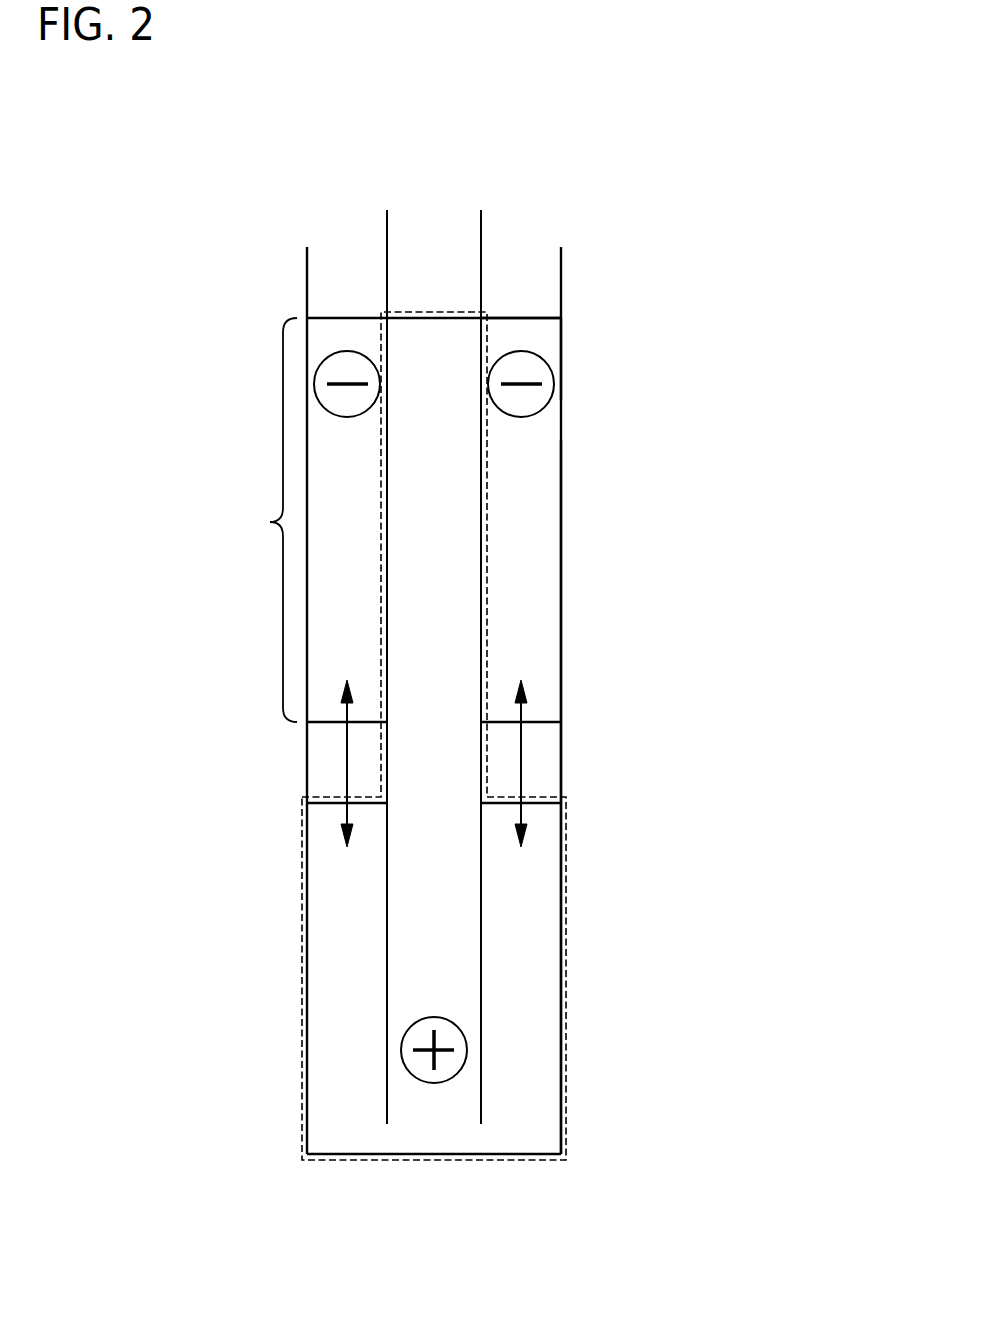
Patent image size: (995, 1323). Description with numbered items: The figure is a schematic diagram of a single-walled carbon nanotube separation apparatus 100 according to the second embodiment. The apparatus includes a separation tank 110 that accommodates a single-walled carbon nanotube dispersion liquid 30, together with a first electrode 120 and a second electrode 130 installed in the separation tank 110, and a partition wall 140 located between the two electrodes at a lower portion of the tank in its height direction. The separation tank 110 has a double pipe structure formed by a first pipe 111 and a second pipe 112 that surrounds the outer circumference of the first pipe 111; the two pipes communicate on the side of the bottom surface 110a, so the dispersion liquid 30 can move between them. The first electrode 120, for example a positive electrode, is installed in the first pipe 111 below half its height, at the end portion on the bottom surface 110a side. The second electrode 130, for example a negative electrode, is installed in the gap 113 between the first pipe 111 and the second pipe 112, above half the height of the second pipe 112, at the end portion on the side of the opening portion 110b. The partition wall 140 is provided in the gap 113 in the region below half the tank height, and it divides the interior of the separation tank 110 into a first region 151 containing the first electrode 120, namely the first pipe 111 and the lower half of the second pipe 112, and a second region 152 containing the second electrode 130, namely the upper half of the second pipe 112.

The single-walled carbon nanotube separation apparatus 100 is at (697, 178).
The separation tank 110 is at (561, 287).
The bottom surface 110a is at (498, 1155).
The opening portion 110b is at (561, 262).
The first pipe 111 is at (481, 456).
The second pipe 112 is at (561, 418).
The gap 113 is at (527, 510).
The single-walled carbon nanotube dispersion liquid 30 is at (535, 580).
The first electrode 120 is at (448, 1018).
The second electrode 130 is at (533, 353).
The partition wall 140 is at (540, 722).
The first region 151 is at (566, 823).
The second region 152 is at (260, 520).